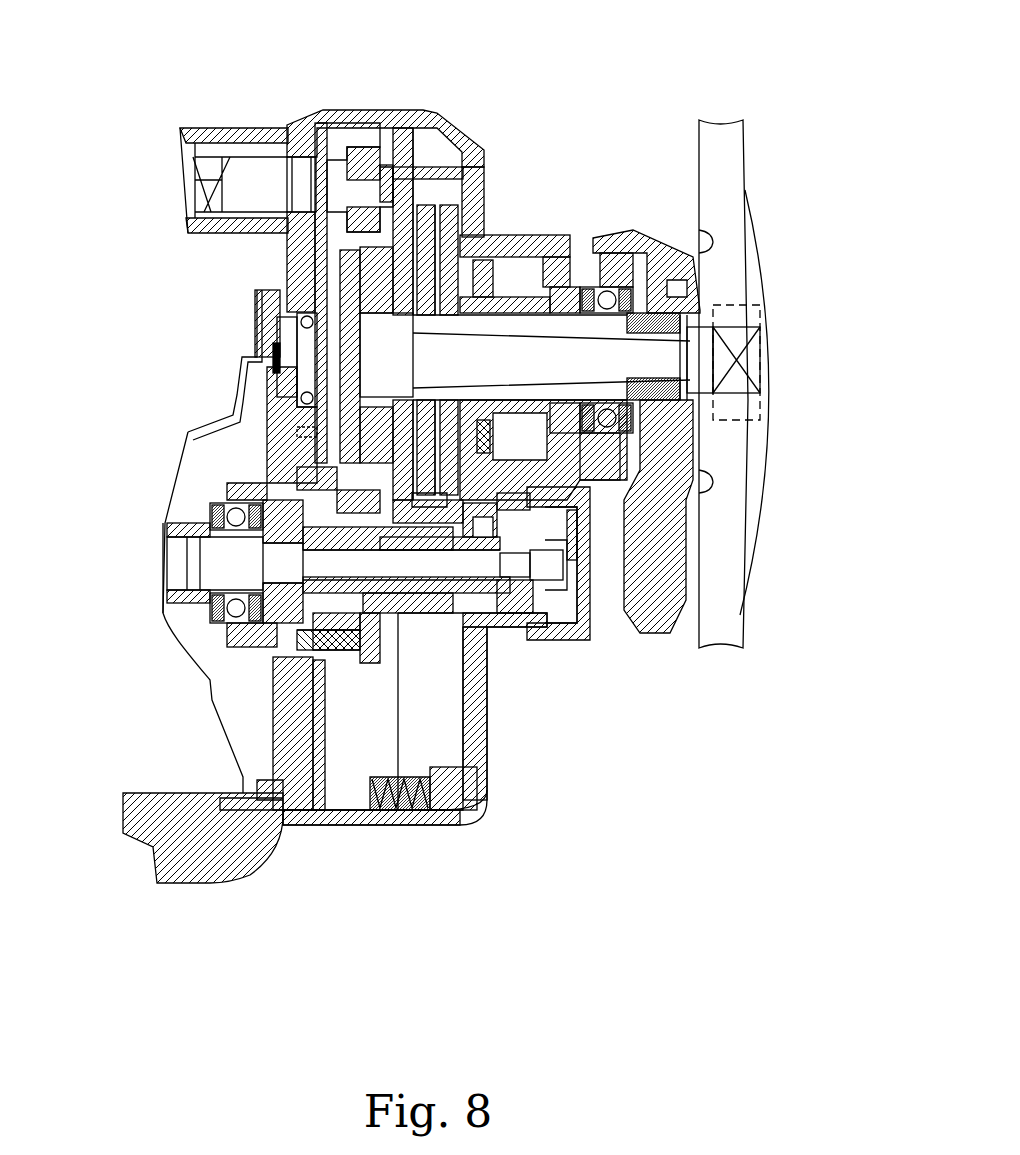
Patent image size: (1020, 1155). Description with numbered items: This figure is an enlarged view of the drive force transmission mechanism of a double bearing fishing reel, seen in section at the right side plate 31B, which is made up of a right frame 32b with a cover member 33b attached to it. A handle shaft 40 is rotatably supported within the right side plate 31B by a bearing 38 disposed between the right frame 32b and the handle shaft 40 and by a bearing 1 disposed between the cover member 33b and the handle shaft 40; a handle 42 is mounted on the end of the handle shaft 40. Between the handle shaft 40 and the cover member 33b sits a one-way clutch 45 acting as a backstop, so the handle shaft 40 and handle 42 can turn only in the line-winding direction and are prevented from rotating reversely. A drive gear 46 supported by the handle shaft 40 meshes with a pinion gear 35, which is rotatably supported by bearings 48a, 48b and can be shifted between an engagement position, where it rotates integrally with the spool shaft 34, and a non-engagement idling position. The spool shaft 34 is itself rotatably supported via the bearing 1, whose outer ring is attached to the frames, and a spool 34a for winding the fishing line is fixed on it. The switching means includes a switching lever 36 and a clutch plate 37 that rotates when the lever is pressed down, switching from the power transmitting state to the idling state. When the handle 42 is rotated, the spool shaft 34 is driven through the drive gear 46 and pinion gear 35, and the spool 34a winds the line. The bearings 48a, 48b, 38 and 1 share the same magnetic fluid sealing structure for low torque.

The right side plate 31B is at (403, 92).
The cover member 33b is at (372, 114).
The drive gear 46 is at (423, 190).
The handle shaft 40 is at (504, 333).
The one-way clutch 45 is at (518, 275).
The bearing 1 is at (590, 287).
The bearing 38 is at (297, 300).
The right frame 32b is at (270, 310).
The spool 34a is at (188, 523).
The spool shaft 34 is at (210, 573).
The bearing 48a is at (292, 613).
The clutch plate 37 is at (340, 643).
The pinion gear 35 is at (423, 598).
The bearing 48b is at (537, 604).
The switching lever 36 is at (233, 865).
The handle 42 is at (733, 585).